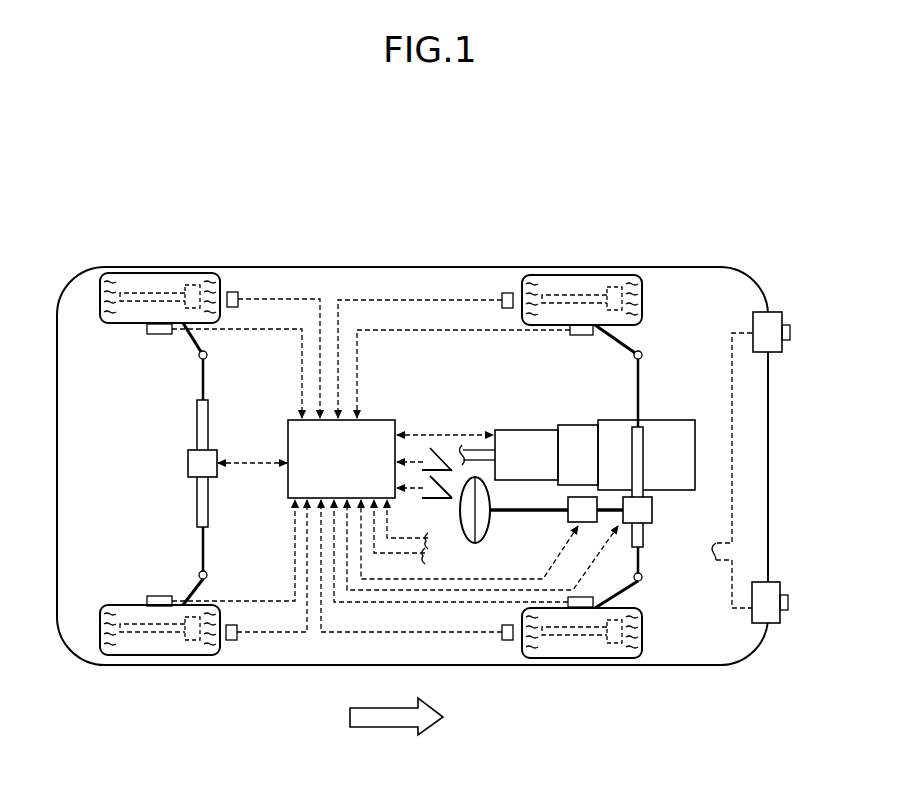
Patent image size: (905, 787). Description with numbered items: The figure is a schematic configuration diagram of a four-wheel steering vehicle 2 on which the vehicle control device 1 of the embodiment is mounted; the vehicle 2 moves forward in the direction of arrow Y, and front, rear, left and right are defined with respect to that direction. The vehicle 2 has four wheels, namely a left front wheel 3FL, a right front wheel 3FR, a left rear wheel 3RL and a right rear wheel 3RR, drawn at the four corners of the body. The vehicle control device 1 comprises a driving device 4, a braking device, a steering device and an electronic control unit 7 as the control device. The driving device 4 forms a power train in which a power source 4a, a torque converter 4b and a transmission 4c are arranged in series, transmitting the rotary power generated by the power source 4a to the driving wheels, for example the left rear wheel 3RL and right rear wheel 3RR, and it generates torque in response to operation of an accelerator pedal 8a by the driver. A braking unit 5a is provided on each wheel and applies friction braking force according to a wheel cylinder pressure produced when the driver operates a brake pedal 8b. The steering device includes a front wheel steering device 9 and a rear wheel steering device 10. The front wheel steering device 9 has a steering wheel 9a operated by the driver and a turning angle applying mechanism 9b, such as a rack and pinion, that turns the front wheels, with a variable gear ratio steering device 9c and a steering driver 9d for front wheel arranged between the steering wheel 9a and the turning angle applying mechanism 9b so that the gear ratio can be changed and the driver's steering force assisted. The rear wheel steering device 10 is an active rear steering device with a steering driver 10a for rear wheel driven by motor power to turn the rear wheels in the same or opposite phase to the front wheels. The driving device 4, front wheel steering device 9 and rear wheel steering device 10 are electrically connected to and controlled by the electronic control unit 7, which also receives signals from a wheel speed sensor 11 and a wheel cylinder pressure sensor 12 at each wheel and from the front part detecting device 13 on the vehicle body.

The vehicle control device 1 is at (277, 241).
The vehicle 2 is at (405, 262).
The left rear wheel 3RL is at (130, 273).
The left front wheel 3FL is at (552, 275).
The right rear wheel 3RR is at (130, 655).
The right front wheel 3FR is at (552, 658).
The braking unit 5a is at (190, 282).
The electronic control unit 7 is at (391, 421).
The accelerator pedal 8a is at (435, 501).
The brake pedal 8b is at (434, 456).
The driving device 4 is at (592, 430).
The power source 4a is at (696, 450).
The torque converter 4b is at (581, 424).
The transmission 4c is at (531, 429).
The front wheel steering device 9 is at (585, 466).
The steering wheel 9a is at (466, 538).
The turning angle applying mechanism 9b is at (644, 446).
The variable gear ratio steering device 9c is at (566, 512).
The steering driver for front wheel 9d is at (651, 523).
The rear wheel steering device 10 is at (206, 464).
The steering driver for rear wheel 10a is at (187, 466).
The wheel speed sensor 11 is at (152, 334).
The wheel cylinder pressure sensor 12 is at (234, 292).
The front part detecting device 13 is at (771, 311).
The arrow indicating forward direction Y is at (388, 728).